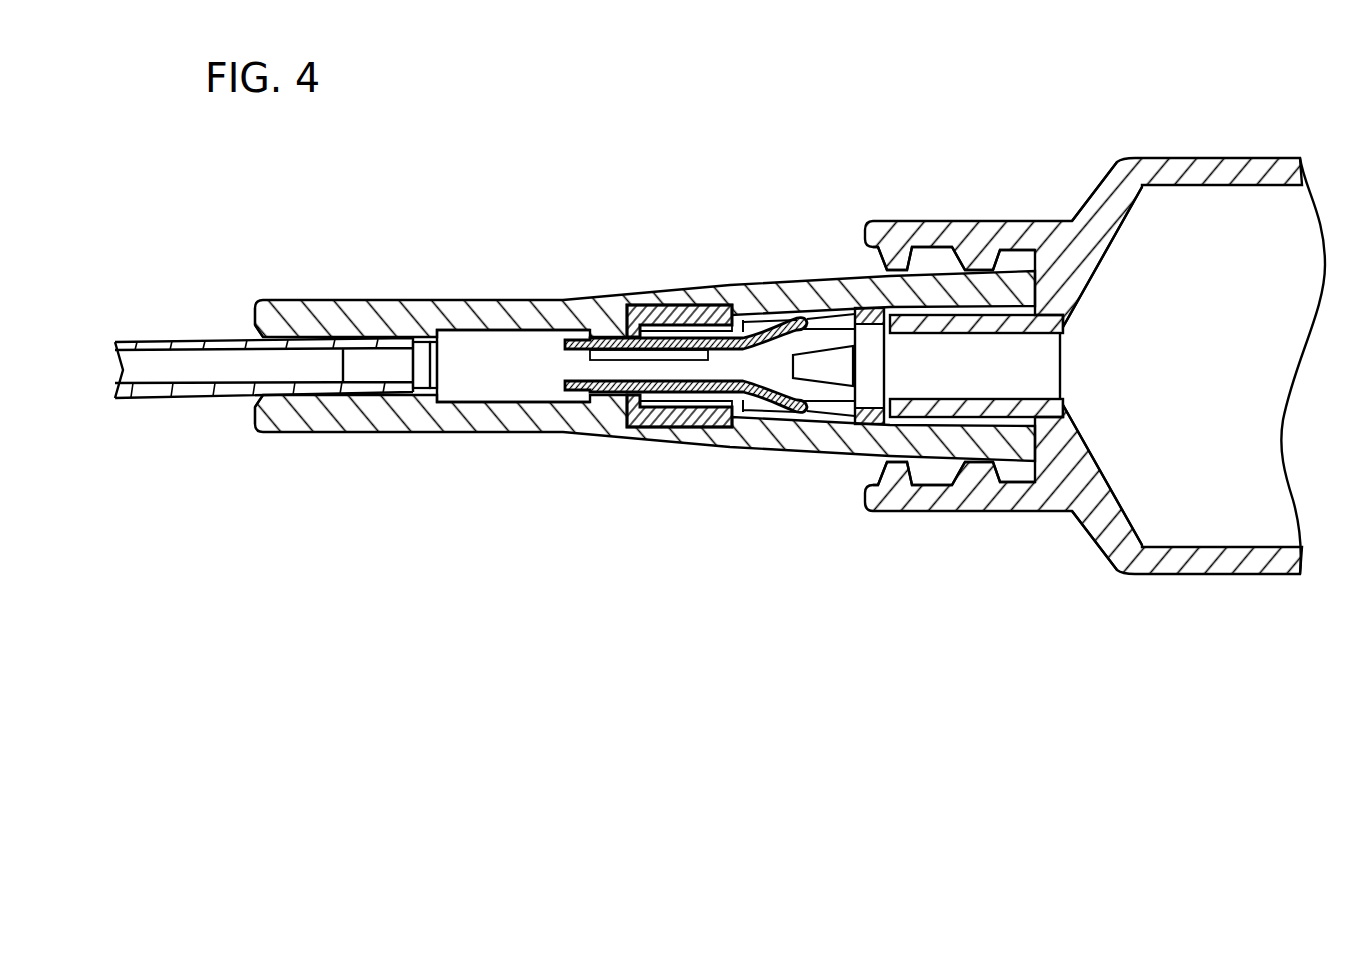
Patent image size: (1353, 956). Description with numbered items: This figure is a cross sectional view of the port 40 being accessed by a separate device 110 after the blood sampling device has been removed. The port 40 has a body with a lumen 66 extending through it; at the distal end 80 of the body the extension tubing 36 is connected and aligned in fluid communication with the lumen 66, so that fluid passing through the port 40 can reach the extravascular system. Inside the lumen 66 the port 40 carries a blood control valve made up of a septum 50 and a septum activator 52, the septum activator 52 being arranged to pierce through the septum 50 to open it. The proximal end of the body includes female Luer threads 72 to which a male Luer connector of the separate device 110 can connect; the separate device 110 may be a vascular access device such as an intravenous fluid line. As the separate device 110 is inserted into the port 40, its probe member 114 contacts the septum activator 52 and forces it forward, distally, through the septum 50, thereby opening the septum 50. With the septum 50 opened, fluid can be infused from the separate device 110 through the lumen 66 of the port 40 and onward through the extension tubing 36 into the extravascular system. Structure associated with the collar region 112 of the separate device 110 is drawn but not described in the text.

The extension tubing 36 is at (162, 337).
The port 40 is at (370, 430).
The septum 50 is at (647, 425).
The septum activator 52 is at (773, 403).
The lumen 66 is at (515, 370).
The Luer threads 72 is at (1037, 440).
The distal end 80 is at (270, 307).
The separate device 110 is at (1218, 573).
The collar 112 is at (915, 255).
The probe member 114 is at (957, 400).